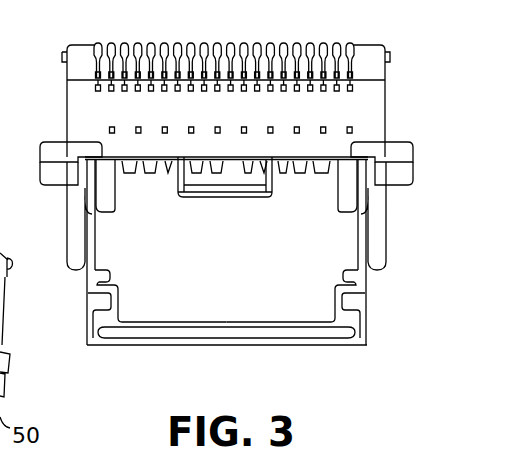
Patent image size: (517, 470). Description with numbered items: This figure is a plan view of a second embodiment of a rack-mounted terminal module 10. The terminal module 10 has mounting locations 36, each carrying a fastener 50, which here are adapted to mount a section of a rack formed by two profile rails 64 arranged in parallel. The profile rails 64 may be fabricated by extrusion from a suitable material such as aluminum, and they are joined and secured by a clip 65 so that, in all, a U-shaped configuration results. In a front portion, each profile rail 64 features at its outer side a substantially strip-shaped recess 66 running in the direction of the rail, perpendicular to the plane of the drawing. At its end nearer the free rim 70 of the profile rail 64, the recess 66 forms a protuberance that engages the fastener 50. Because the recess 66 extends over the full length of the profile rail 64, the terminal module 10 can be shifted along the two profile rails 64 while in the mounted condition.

The terminal module 10 is at (51, 73).
The mounting location 36 is at (80, 175).
The fastener 50 is at (85, 208).
The profile rail 64 is at (88, 275).
The clip 65 is at (238, 333).
The recess 66 is at (92, 218).
The free rim 70 is at (88, 157).